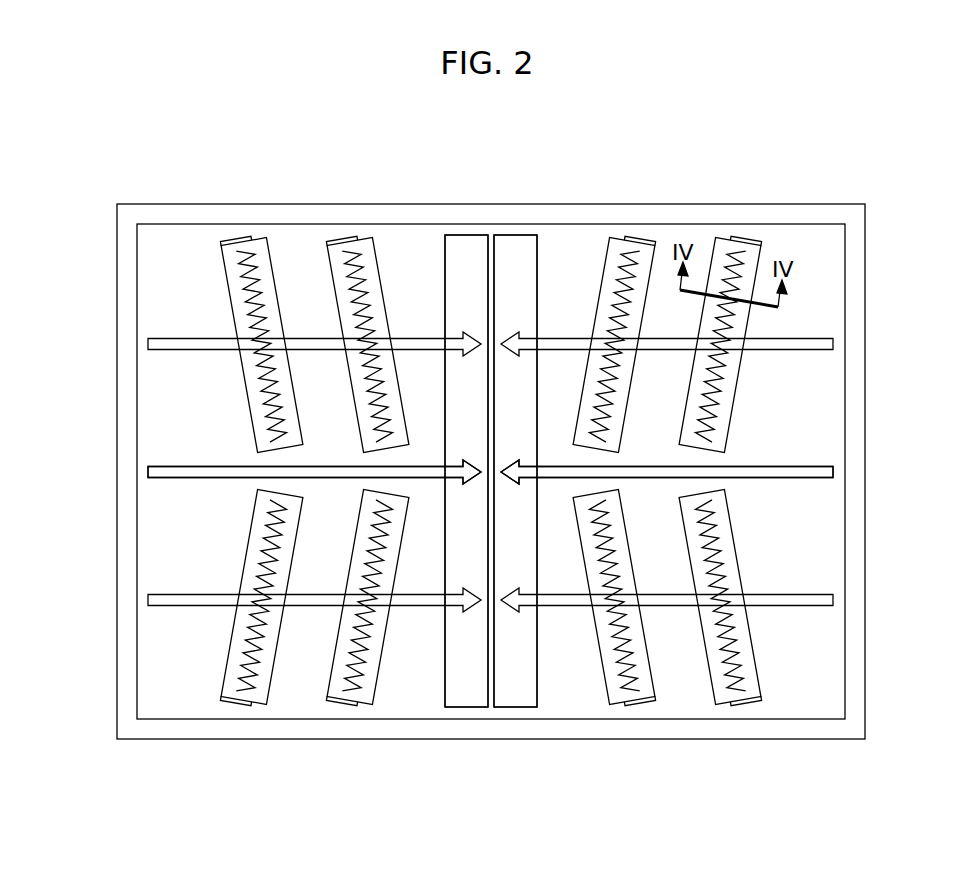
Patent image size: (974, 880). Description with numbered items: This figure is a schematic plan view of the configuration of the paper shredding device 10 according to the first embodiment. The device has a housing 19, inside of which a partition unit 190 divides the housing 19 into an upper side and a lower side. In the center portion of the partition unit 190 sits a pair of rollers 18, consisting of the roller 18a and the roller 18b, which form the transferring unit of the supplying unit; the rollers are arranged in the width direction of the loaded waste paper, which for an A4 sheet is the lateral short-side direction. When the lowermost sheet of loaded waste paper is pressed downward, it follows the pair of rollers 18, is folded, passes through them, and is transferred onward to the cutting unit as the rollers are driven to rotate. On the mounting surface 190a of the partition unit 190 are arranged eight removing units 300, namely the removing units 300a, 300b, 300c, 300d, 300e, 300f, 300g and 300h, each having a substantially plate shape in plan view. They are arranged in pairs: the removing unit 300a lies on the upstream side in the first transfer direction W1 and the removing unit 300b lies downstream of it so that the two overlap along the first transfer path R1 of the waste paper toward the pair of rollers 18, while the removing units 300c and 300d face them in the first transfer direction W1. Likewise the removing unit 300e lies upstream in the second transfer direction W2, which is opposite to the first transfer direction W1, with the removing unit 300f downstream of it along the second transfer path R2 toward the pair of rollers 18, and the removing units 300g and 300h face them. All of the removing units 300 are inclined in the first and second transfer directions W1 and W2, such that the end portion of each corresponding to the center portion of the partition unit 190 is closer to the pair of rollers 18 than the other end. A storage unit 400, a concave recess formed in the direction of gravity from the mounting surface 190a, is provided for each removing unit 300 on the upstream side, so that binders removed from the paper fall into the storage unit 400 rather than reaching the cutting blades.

The paper shredding device 10 is at (890, 142).
The housing 19 is at (127, 263).
The pair of rollers 18 is at (491, 543).
The roller 18a is at (522, 697).
The roller 18b is at (468, 697).
The partition unit 190 is at (427, 243).
The mounting surface 190a is at (557, 243).
The removing unit 300 is at (502, 466).
The removing unit 300a is at (723, 255).
The removing unit 300b is at (616, 257).
The removing unit 300c is at (725, 688).
The removing unit 300d is at (618, 688).
The removing unit 300e is at (258, 257).
The removing unit 300f is at (366, 257).
The removing unit 300g is at (258, 688).
The removing unit 300h is at (364, 688).
The storage unit 400 is at (232, 246).
The first transfer path R1 is at (807, 342).
The second transfer path R2 is at (165, 342).
The first transfer direction W1 is at (807, 479).
The second transfer direction W2 is at (178, 479).